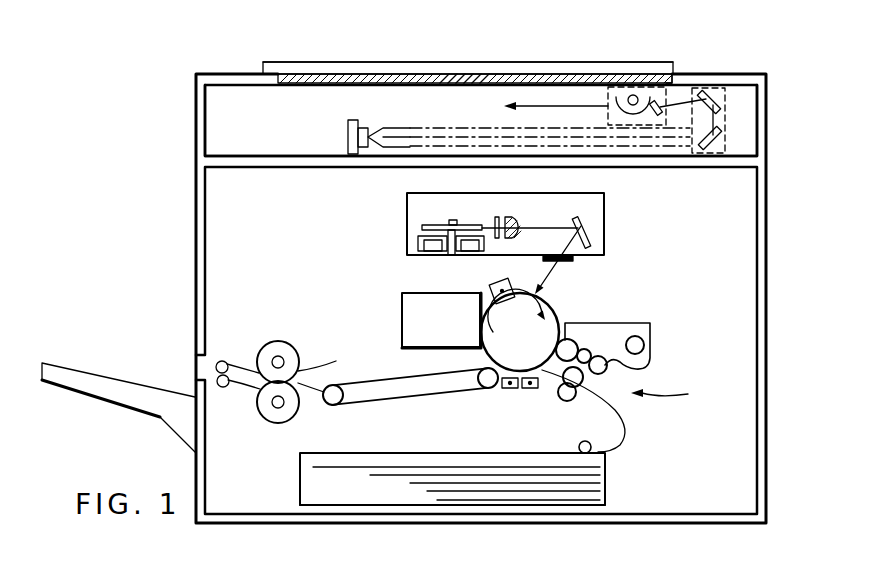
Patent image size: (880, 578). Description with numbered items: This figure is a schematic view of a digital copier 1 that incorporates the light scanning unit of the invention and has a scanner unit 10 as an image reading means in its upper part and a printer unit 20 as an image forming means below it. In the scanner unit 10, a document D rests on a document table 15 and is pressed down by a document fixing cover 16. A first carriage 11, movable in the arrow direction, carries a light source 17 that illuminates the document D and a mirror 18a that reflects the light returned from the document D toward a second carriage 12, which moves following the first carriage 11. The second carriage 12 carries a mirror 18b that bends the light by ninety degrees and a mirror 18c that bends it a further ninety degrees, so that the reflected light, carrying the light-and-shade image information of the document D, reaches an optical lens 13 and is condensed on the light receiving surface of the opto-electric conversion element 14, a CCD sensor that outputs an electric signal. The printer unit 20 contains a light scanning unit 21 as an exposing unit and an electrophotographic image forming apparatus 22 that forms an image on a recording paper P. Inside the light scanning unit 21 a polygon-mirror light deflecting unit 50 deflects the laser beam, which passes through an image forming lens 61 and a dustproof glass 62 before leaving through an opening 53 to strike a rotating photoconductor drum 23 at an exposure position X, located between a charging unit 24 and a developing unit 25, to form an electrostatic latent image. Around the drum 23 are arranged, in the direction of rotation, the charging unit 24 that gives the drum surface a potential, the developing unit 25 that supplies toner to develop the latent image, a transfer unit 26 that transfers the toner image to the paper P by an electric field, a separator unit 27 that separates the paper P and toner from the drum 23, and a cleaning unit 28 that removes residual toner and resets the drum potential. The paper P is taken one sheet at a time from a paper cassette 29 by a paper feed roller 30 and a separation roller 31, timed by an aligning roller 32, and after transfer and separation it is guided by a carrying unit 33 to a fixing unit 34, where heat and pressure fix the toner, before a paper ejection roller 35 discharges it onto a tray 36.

The digital copier 1 is at (192, 61).
The scanner unit 10 is at (215, 118).
The first carriage 11 is at (599, 62).
The second carriage 12 is at (725, 153).
The optical lens 13 is at (392, 128).
The opto-electric conversion element 14 is at (345, 136).
The document table 15 is at (356, 74).
The document fixing cover 16 is at (468, 74).
The light source 17 is at (640, 92).
The mirror 18a is at (668, 84).
The mirror 18b is at (720, 100).
The mirror 18c is at (720, 131).
The printer unit 20 is at (757, 426).
The light scanning unit 21 is at (604, 222).
The image forming apparatus 22 is at (672, 395).
The photoconductor drum 23 is at (557, 312).
The charging unit 24 is at (492, 283).
The developing unit 25 is at (645, 323).
The transfer unit 26 is at (524, 390).
The separator unit 27 is at (503, 392).
The cleaning unit 28 is at (402, 320).
The paper cassette 29 is at (354, 492).
The paper feed roller 30 is at (606, 463).
The separation roller 31 is at (592, 444).
The aligning roller 32 is at (566, 402).
The carrying unit 33 is at (382, 398).
The fixing unit 34 is at (278, 341).
The paper ejection roller 35 is at (226, 390).
The tray 36 is at (103, 400).
The light deflecting unit 50 is at (420, 218).
The exposure window 53 is at (548, 262).
The image forming lens 61 is at (516, 218).
The dustproof glass 62 is at (498, 217).
The document D is at (541, 68).
The recording paper P is at (492, 494).
The exposure position X is at (540, 293).